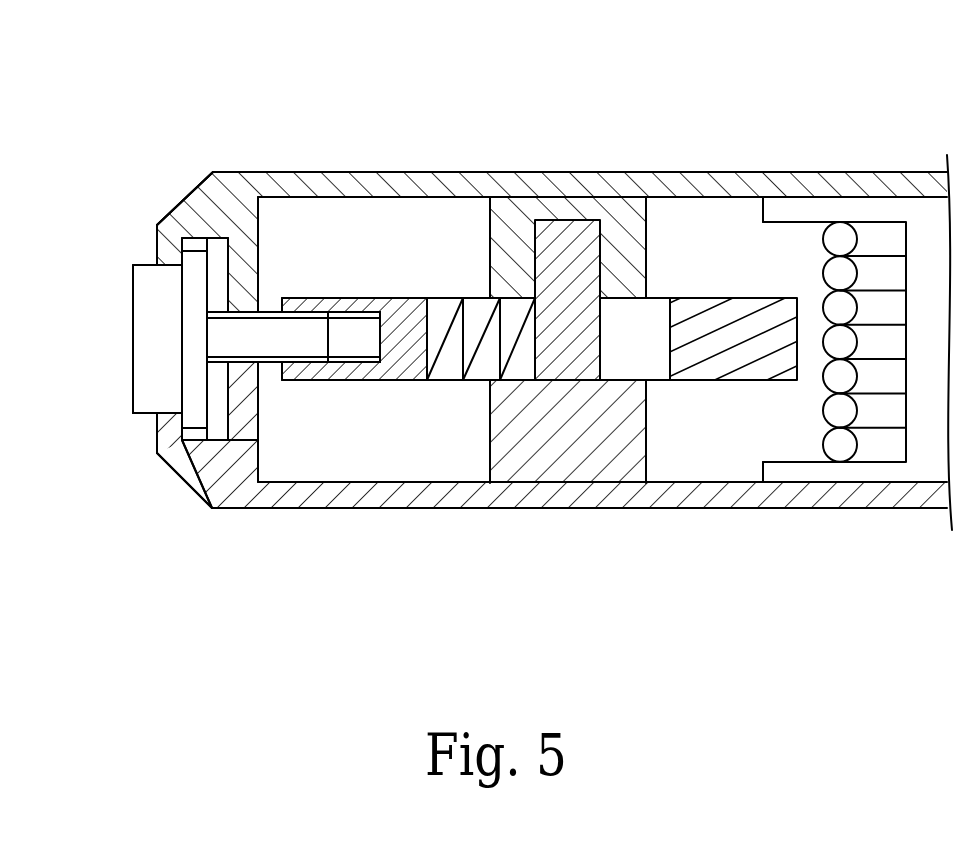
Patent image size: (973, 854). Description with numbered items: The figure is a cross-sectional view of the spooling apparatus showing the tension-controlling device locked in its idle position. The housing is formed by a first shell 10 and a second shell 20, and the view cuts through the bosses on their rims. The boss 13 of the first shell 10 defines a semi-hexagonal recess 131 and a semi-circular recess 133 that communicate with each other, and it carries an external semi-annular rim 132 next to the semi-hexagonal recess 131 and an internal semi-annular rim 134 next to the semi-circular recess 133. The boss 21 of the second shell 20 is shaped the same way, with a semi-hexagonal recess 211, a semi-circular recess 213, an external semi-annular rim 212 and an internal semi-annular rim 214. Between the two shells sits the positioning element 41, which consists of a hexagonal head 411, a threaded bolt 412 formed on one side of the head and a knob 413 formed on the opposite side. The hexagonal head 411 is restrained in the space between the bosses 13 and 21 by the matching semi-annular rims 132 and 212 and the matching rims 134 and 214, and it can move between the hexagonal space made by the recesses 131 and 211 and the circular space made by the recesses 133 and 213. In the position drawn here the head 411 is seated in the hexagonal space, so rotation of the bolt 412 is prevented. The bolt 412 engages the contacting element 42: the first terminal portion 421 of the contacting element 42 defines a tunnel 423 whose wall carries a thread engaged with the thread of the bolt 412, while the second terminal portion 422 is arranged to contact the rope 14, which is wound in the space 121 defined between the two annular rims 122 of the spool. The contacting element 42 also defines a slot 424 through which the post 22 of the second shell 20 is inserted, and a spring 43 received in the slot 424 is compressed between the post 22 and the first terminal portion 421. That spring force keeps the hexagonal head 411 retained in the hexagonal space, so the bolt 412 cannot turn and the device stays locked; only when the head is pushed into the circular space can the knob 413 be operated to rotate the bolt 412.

The first shell 10 is at (555, 180).
The boss 13 is at (193, 213).
The semi-hexagonal recess 131 is at (163, 264).
The external semi-annular rim 132 is at (158, 264).
The semi-circular recess 133 is at (210, 236).
The internal semi-annular rim 134 is at (248, 312).
The rope 14 is at (840, 237).
The space 121 is at (813, 447).
The annular rims 122 is at (770, 472).
The second shell 20 is at (562, 497).
The boss 21 is at (175, 455).
The semi-hexagonal recess 211 is at (192, 443).
The external semi-annular rim 212 is at (163, 430).
The semi-circular recess 213 is at (220, 443).
The internal semi-annular rim 214 is at (243, 367).
The post 22 is at (583, 230).
The positioning element 41 is at (124, 333).
The hexagonal head 411 is at (198, 383).
The bolt 412 is at (343, 316).
The knob 413 is at (160, 288).
The contacting element 42 is at (398, 298).
The first terminal portion 421 is at (283, 298).
The second terminal portion 422 is at (800, 305).
The tunnel 423 is at (337, 363).
The slot 424 is at (475, 310).
The spring 43 is at (437, 358).